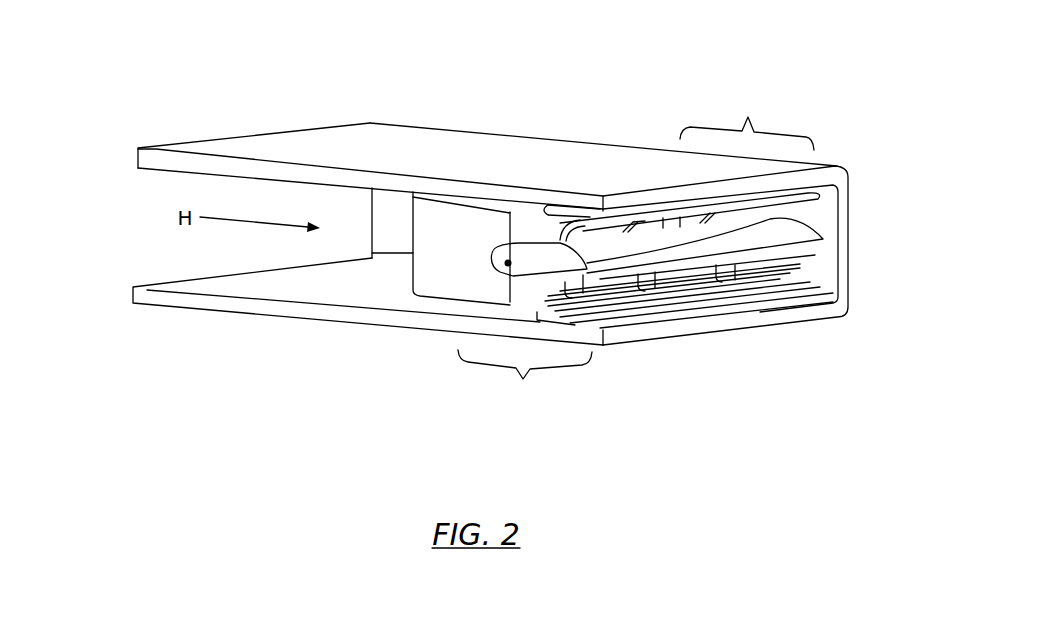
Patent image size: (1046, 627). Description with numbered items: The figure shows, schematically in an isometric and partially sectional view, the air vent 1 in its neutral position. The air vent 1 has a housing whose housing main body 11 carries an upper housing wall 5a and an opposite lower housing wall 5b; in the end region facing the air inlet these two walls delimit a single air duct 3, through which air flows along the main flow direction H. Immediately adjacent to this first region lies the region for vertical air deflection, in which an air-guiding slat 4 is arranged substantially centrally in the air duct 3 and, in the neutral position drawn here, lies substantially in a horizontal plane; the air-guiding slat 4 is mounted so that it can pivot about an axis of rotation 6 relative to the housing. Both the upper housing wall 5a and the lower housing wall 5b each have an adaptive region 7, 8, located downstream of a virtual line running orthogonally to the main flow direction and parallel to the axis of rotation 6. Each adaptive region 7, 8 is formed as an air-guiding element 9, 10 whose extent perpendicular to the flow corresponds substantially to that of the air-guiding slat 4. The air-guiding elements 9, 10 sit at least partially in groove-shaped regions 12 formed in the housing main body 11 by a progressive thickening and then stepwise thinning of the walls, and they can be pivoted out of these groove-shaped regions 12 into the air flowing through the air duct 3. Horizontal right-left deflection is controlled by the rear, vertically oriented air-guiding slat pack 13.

The air vent 1 is at (590, 106).
The air duct 3 is at (210, 262).
The air-guiding slat 4 is at (790, 238).
The upper housing wall 5a is at (208, 170).
The lower housing wall 5b is at (207, 305).
The axis of rotation 6 is at (507, 263).
The adaptive region 7 is at (747, 121).
The adaptive region 8 is at (525, 379).
The air-guiding element 9 is at (780, 198).
The air-guiding element 10 is at (607, 313).
The housing main body 11 is at (728, 327).
The groove-shaped region 12 is at (590, 215).
The air-guiding slat pack 13 is at (445, 260).